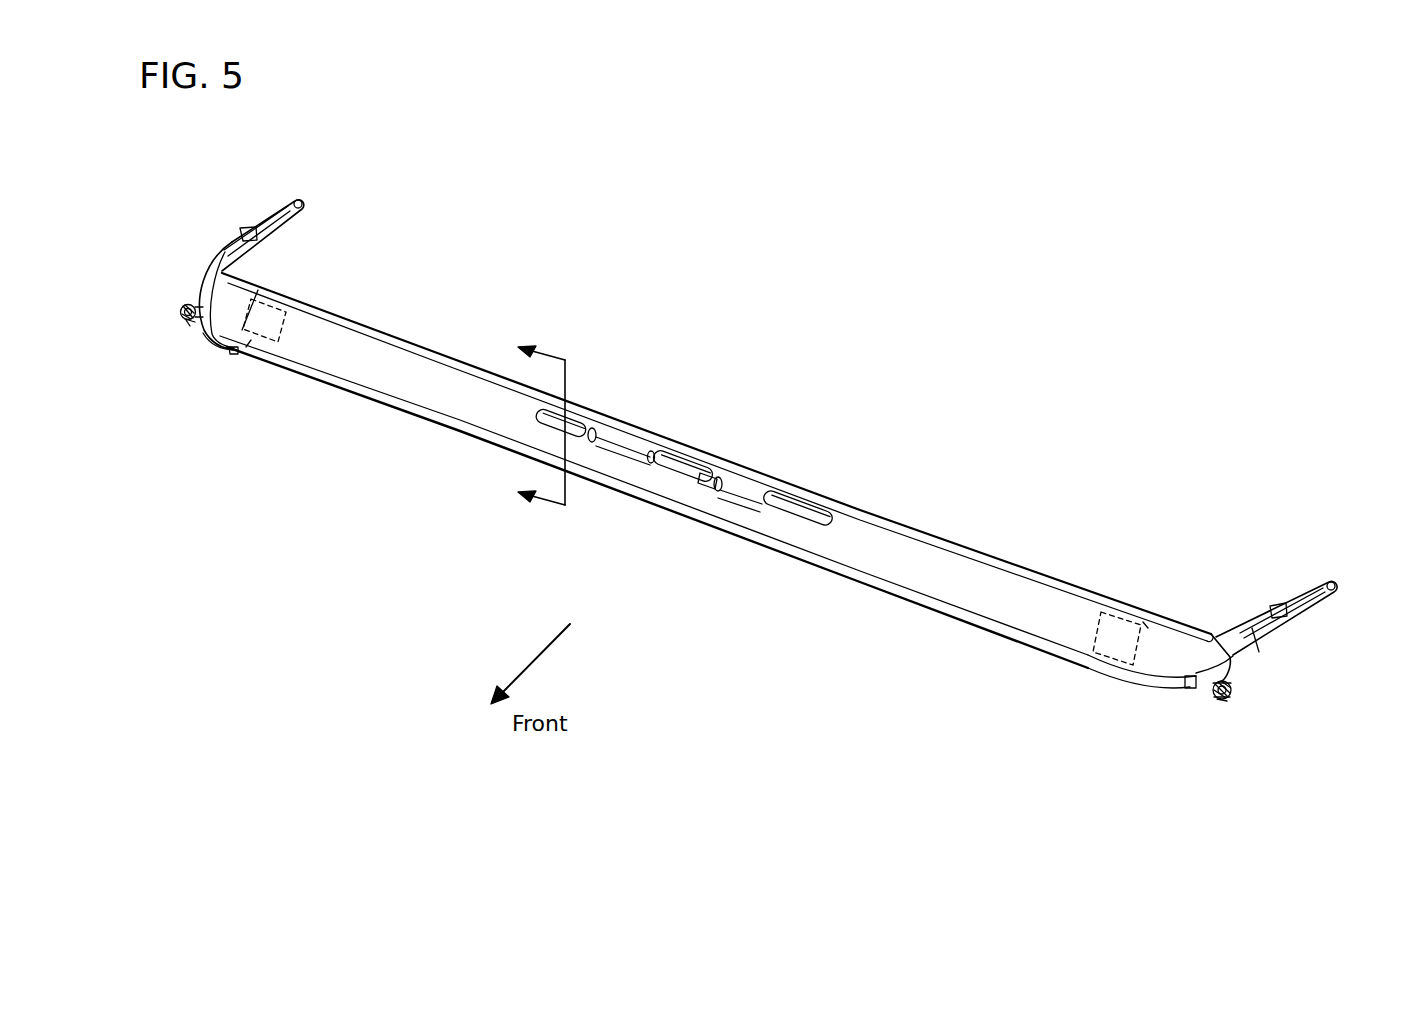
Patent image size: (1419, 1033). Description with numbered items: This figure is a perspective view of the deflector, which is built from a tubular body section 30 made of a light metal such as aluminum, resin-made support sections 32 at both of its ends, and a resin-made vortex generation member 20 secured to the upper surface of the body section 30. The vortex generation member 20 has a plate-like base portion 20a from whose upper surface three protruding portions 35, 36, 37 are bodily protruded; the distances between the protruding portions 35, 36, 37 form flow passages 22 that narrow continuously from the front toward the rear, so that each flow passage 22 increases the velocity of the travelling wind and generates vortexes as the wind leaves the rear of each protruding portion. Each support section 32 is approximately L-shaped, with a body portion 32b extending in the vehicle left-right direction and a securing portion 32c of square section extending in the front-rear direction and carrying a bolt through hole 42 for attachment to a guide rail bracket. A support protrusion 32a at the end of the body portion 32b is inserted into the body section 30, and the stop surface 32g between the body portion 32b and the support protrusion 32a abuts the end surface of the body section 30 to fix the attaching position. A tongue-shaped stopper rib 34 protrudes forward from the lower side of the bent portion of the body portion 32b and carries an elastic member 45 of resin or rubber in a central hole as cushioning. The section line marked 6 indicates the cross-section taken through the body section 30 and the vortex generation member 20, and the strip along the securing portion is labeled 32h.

The body section 30 is at (458, 380).
The support section 32 is at (210, 286).
The support protrusion 32a is at (266, 355).
The body portion 32b is at (223, 318).
The securing portion 32c is at (275, 210).
The stop surface 32g is at (247, 350).
The arm strip 32h is at (238, 232).
The stopper rib 34 is at (185, 306).
The protruding portion 35 is at (578, 418).
The protruding portion 36 is at (682, 457).
The protruding portion 37 is at (793, 500).
The vortex generation member 20 is at (618, 452).
The base portion 20a is at (640, 453).
The flow passage 22 is at (618, 440).
The bolt through hole 42 is at (302, 204).
The elastic member 45 is at (190, 322).
The section line 6- 6 is at (533, 417).